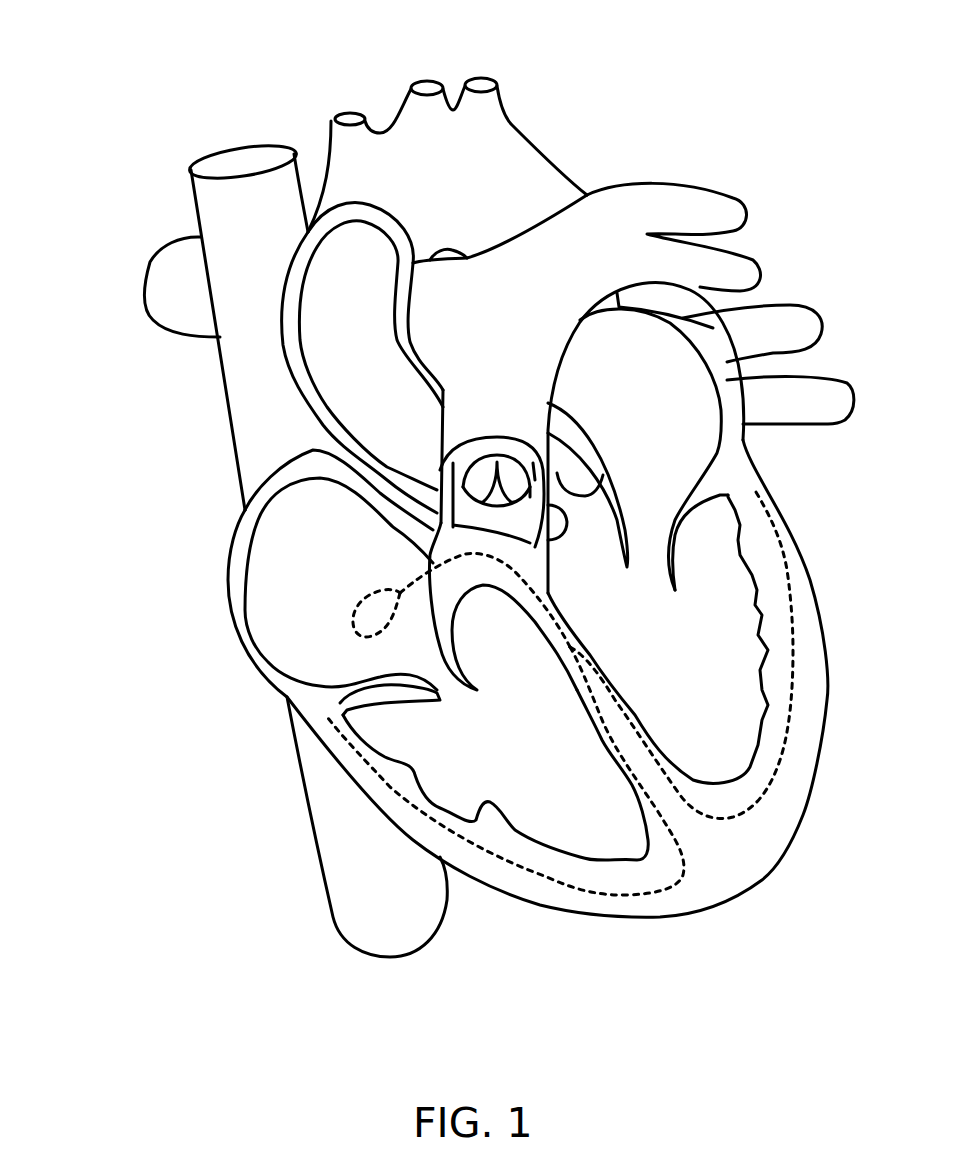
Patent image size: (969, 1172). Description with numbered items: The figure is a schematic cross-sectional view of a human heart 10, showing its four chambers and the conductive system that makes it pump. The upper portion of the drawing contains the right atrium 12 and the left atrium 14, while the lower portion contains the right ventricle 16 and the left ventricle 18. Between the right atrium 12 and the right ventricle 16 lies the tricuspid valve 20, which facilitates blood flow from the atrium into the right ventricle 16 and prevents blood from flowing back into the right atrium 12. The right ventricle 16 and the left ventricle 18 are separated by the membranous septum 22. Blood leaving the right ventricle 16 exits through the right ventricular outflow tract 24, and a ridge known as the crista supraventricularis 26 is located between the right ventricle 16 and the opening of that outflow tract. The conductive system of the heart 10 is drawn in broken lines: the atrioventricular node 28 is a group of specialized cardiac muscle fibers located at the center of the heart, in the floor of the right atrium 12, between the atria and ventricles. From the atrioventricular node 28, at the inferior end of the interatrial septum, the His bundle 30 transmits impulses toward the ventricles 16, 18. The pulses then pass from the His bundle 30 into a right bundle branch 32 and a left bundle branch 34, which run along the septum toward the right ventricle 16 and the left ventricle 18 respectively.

The human heart 10 is at (462, 487).
The right atrium 12 is at (331, 533).
The left atrium 14 is at (613, 382).
The right ventricle 16 is at (613, 850).
The left ventricle 18 is at (726, 751).
The tricuspid valve 20 is at (458, 709).
The membranous septum 22 is at (570, 600).
The right ventricular outflow tract 24 is at (514, 410).
The crista supraventricularis 26 is at (481, 598).
The atrioventricular node 28 is at (368, 624).
The His bundle 30 is at (465, 549).
The right bundle branch 32 is at (584, 897).
The left bundle branch 34 is at (786, 779).